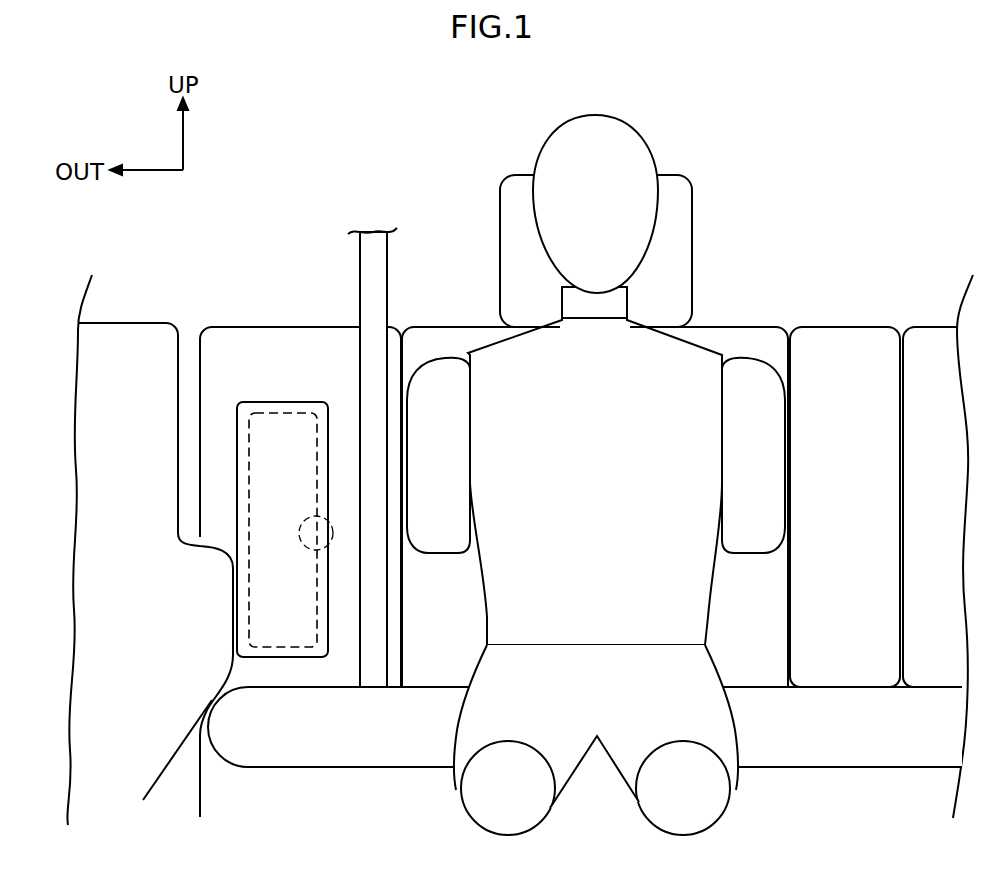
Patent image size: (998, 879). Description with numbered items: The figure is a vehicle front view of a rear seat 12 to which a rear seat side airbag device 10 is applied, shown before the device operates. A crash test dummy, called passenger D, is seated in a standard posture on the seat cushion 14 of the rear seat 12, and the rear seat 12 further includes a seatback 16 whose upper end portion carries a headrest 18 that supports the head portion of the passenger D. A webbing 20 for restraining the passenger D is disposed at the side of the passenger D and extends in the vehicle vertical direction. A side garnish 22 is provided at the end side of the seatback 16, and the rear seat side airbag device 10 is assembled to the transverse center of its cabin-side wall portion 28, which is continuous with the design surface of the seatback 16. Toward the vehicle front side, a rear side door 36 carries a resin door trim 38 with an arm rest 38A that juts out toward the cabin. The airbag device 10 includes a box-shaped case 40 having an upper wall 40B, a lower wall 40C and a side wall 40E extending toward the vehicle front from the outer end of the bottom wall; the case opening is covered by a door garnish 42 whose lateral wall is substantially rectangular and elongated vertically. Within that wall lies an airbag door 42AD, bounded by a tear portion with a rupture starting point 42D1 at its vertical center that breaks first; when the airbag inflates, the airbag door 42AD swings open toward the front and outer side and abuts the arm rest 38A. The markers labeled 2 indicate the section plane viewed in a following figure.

The rear seat side airbag device 10 is at (300, 468).
The rear seat 12 is at (445, 320).
The seat cushion 14 is at (750, 682).
The seatback 16 is at (750, 337).
The headrest 18 is at (675, 220).
The webbing 20 is at (363, 272).
The side garnish 22 is at (213, 342).
The cabin-side wall portion 28 is at (283, 340).
The rear side door 36 is at (107, 318).
The door trim 38 is at (150, 340).
The arm rest 38A is at (183, 533).
The case 40 is at (288, 544).
The upper wall 40B is at (296, 413).
The lower wall 40C is at (267, 648).
The side wall 40E is at (247, 485).
The door garnish 42 is at (252, 396).
The airbag door 42AD is at (306, 588).
The rupture starting point 42D1 is at (327, 570).
The passenger D is at (687, 370).
The section line of FIG. 2 is at (60, 580).